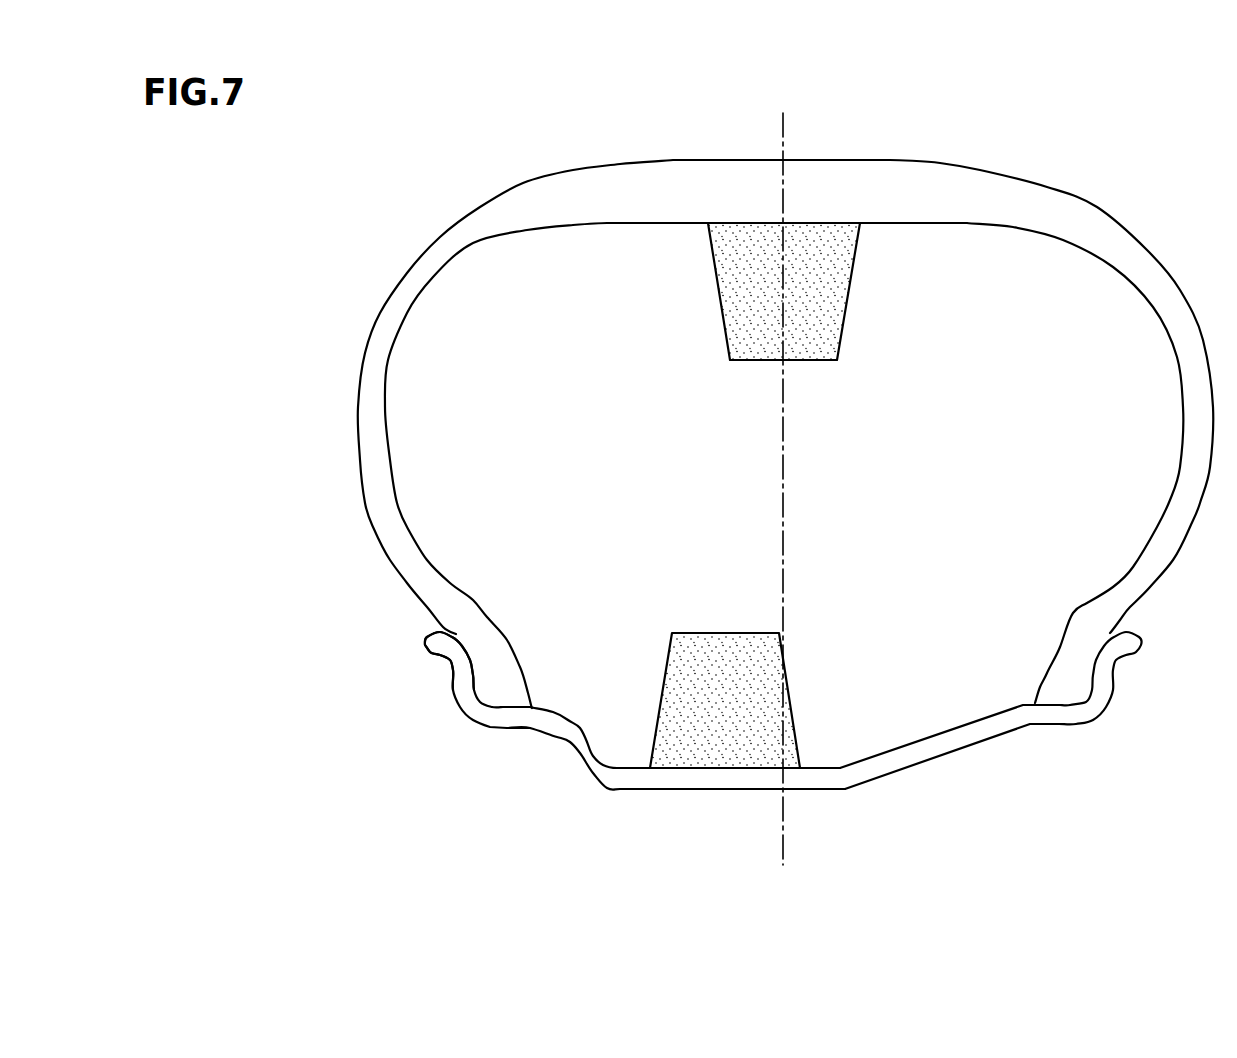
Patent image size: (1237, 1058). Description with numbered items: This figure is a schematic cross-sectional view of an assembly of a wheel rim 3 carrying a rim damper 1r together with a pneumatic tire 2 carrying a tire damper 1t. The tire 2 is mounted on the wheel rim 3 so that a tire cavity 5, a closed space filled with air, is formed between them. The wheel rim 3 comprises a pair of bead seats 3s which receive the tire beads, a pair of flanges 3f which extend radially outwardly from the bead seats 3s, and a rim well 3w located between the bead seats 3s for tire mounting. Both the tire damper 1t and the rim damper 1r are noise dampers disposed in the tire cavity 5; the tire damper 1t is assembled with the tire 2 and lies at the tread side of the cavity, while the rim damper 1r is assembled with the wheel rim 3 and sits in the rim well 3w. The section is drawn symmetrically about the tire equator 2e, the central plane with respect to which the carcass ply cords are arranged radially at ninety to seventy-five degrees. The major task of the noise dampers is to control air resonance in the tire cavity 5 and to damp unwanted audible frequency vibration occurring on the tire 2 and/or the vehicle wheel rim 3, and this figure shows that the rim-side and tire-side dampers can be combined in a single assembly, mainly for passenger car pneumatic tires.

The pneumatic tire 2 is at (1023, 151).
The tire equator 2e is at (785, 135).
The tire damper 1t is at (743, 273).
The rim damper 1r is at (713, 660).
The tire cavity 5 is at (950, 493).
The wheel rim 3 is at (727, 780).
The flange 3f is at (423, 642).
The bead seat 3s is at (503, 707).
The rim well 3w is at (680, 770).